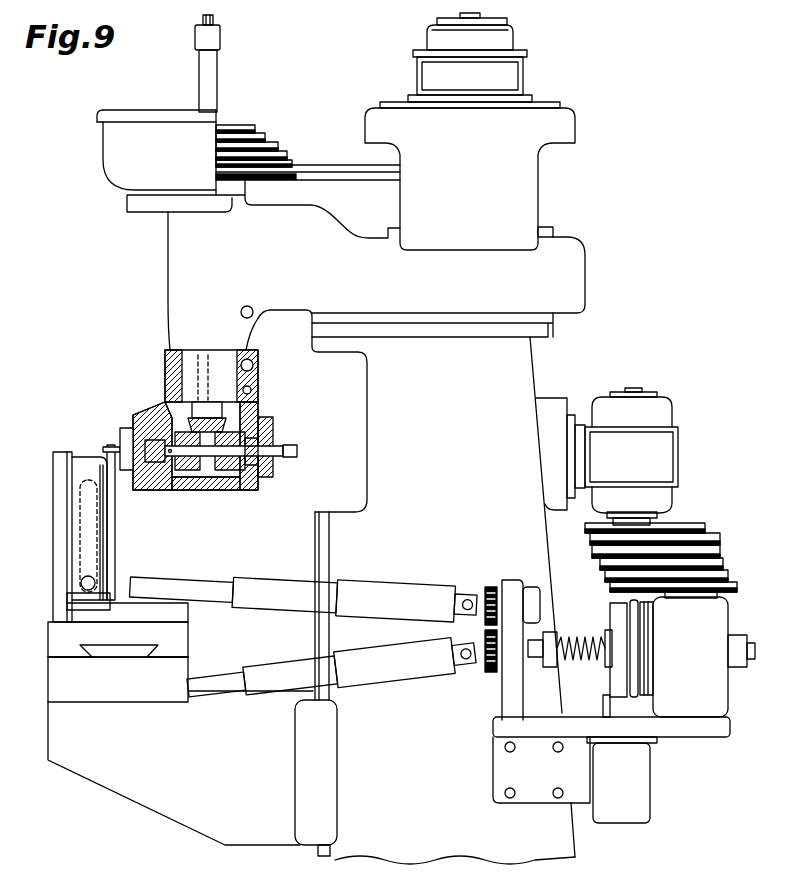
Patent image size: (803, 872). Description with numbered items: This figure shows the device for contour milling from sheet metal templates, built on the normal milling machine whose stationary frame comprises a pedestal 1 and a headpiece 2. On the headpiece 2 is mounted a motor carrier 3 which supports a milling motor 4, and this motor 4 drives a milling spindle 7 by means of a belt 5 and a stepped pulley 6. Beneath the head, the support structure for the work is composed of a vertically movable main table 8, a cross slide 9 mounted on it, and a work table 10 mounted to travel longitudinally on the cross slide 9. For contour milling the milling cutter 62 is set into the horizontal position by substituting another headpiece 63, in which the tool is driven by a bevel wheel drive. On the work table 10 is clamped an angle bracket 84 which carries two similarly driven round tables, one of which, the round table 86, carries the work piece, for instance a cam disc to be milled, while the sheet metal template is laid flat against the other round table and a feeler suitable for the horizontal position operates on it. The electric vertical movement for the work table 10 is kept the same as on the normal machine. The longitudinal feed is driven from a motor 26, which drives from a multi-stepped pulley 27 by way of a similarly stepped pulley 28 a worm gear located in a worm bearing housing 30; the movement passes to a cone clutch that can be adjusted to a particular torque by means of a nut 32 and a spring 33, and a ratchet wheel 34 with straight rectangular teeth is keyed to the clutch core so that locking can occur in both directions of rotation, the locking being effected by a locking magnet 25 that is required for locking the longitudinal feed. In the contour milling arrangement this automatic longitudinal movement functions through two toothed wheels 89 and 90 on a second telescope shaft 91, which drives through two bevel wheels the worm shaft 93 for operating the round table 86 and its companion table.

The pedestal 1 is at (512, 363).
The headpiece 2 is at (176, 282).
The motor carrier 3 is at (527, 200).
The milling motor 4 is at (500, 33).
The belt 5 is at (333, 173).
The stepped pulley 6 is at (235, 127).
The milling spindle 7 is at (213, 68).
The main table 8 is at (100, 772).
The cross slide 9 is at (60, 679).
The work table 10 is at (56, 634).
The locking magnet 25 is at (635, 783).
The motor 26 is at (654, 448).
The multi-stepped pulley 27 is at (586, 542).
The stepped pulley 28 is at (722, 555).
The worm bearing housing 30 is at (720, 627).
The nut 32 is at (556, 640).
The spring 33 is at (583, 665).
The ratchet wheel 34 is at (618, 612).
The milling cutter 62 is at (110, 445).
The headpiece 63 is at (185, 364).
The angle bracket 84 is at (56, 485).
The round table 86 is at (88, 458).
The toothed wheel 89 is at (490, 587).
The toothed wheel 90 is at (486, 670).
The second telescope shaft 91 is at (378, 594).
The worm shaft 93 is at (78, 587).